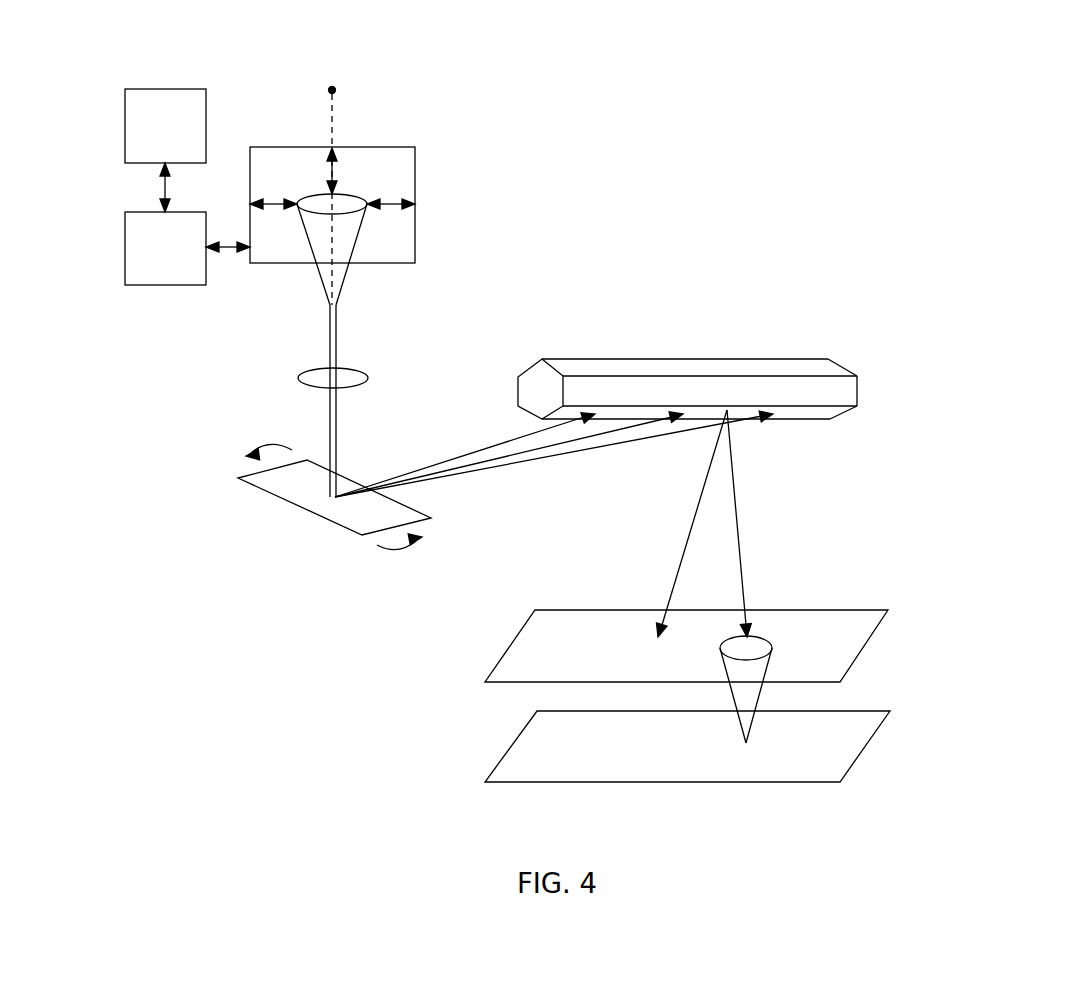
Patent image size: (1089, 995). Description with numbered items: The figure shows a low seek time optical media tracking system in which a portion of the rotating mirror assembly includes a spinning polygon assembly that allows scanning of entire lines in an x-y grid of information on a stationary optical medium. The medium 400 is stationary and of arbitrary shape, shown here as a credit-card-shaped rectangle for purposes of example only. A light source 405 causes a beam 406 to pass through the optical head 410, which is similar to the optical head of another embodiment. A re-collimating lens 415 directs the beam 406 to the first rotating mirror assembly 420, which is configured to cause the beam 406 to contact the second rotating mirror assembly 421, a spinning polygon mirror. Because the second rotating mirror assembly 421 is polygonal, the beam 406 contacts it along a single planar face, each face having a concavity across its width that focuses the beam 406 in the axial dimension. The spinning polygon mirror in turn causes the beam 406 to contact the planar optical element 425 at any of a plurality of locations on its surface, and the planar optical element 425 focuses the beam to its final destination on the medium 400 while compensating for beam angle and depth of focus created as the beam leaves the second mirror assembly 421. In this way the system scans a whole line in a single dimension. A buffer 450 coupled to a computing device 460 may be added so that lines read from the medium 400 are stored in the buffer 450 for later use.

The medium 400 is at (530, 743).
The light source 405 is at (332, 87).
The beam 406 is at (338, 345).
The optical head 410 is at (415, 147).
The re-collimating lens 415 is at (368, 378).
The first rotating mirror assembly 420 is at (317, 515).
The second rotating mirror assembly 421 is at (711, 363).
The planar optical element 425 is at (817, 610).
The buffer 450 is at (165, 89).
The computing device 460 is at (163, 285).